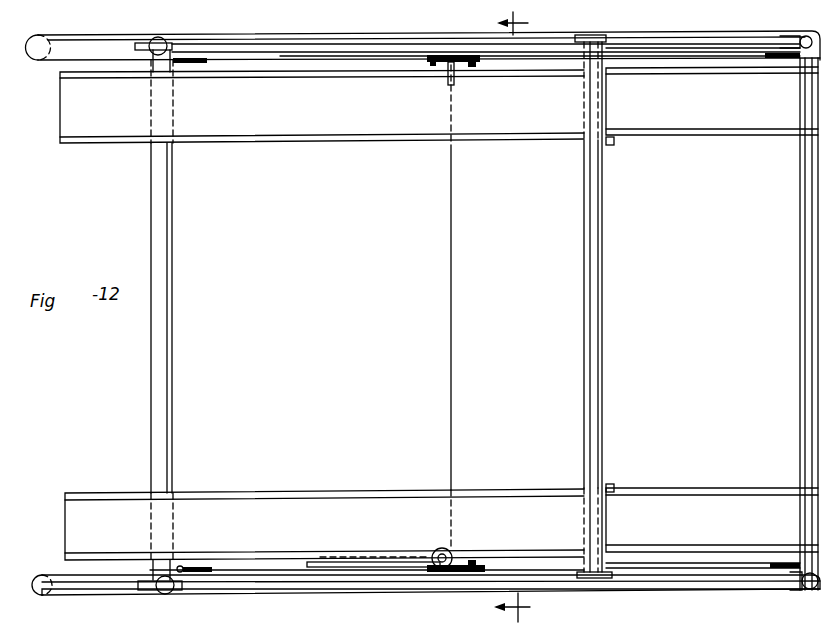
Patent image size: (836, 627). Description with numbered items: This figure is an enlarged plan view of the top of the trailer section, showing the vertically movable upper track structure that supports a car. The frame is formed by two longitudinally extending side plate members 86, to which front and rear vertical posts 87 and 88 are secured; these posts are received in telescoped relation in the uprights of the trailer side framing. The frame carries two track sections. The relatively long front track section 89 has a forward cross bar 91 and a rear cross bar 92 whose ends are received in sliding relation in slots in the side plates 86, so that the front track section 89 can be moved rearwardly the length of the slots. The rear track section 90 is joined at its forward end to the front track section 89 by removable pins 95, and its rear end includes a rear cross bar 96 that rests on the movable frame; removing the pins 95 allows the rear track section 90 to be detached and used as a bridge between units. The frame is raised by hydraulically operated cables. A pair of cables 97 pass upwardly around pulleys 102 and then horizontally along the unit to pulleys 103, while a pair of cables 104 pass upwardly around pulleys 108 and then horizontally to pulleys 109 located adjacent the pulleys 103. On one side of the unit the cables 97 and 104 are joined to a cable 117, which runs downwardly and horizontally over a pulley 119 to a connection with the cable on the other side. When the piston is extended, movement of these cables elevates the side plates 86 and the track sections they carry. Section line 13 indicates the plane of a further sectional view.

The section line 13- 13 is at (527, 316).
The side plate member 86 is at (343, 22).
The front vertical post 87 is at (160, 596).
The rear vertical post 88 is at (808, 591).
The front track section 89 is at (338, 122).
The rear track section 90 is at (717, 122).
The forward cross bar 91 is at (171, 192).
The rear cross bar 92 is at (598, 252).
The removable pin 95 is at (610, 145).
The rear cross bar 96 is at (807, 303).
The cable 97 is at (255, 33).
The pulley 102 is at (200, 57).
The pulley 103 is at (437, 54).
The cable 104 is at (690, 58).
The pulley 108 is at (772, 52).
The pulley 109 is at (472, 67).
The cable 117 is at (452, 290).
The pulley 119 is at (454, 548).